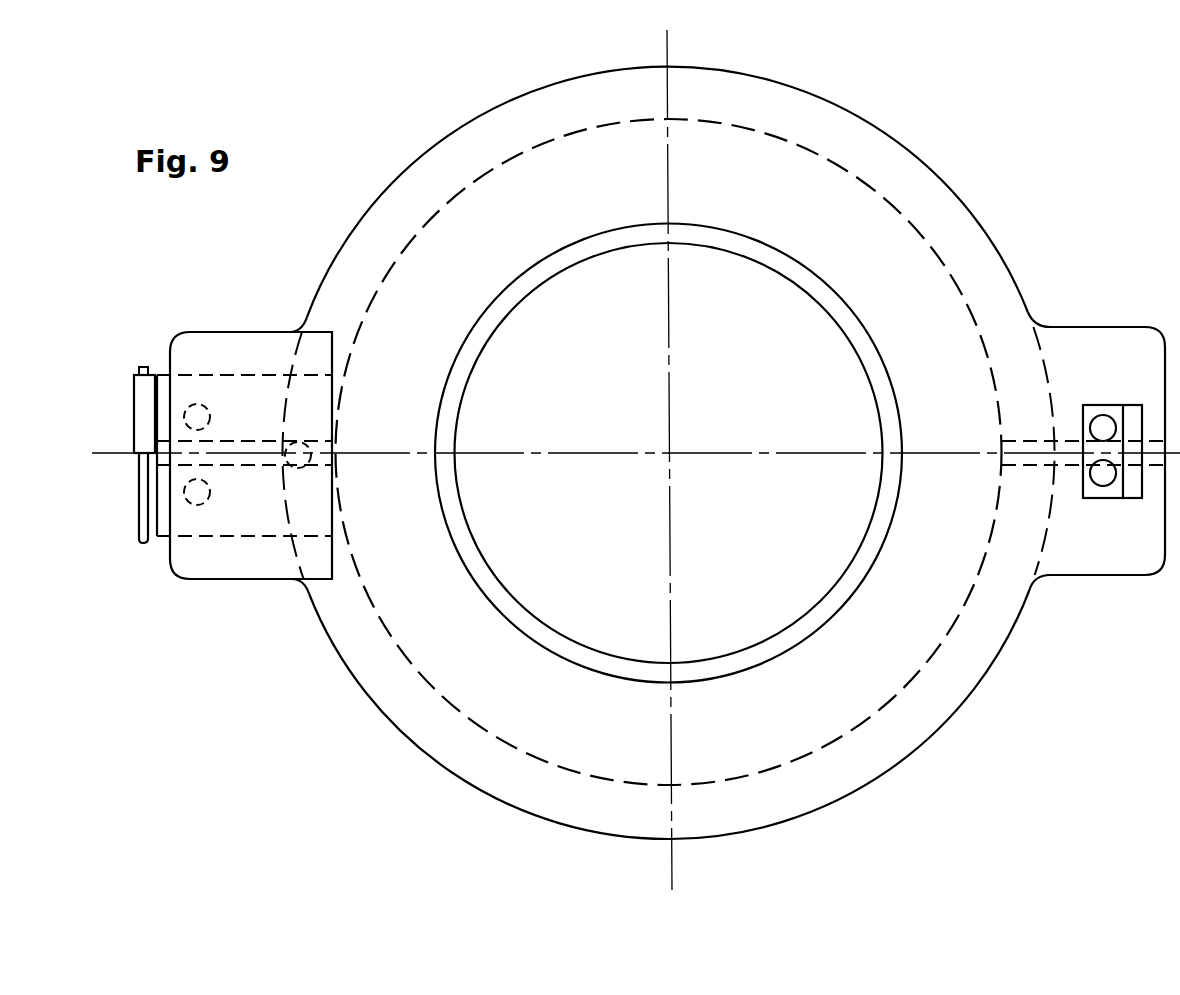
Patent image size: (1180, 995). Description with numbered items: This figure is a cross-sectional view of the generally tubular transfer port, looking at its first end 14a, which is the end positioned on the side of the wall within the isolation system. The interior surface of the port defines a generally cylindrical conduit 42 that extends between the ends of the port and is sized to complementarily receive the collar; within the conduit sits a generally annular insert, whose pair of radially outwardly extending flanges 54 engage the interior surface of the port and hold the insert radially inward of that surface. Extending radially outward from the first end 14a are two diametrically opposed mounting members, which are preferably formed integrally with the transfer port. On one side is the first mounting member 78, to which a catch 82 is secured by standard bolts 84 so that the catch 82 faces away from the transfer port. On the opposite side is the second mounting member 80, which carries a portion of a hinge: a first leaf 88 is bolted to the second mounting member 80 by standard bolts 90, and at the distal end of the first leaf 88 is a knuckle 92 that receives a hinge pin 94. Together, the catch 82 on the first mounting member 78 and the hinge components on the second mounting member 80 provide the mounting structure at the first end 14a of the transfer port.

The first end 14a is at (897, 261).
The flanges 54 is at (868, 360).
The conduit 42 is at (790, 556).
The second mounting member 80 is at (253, 340).
The first leaf 88 is at (272, 520).
The bolts 90 is at (200, 483).
The knuckle 92 is at (143, 405).
The hinge pin 94 is at (143, 545).
The first mounting member 78 is at (1145, 345).
The catch 82 is at (1135, 485).
The bolts 84 is at (1100, 418).